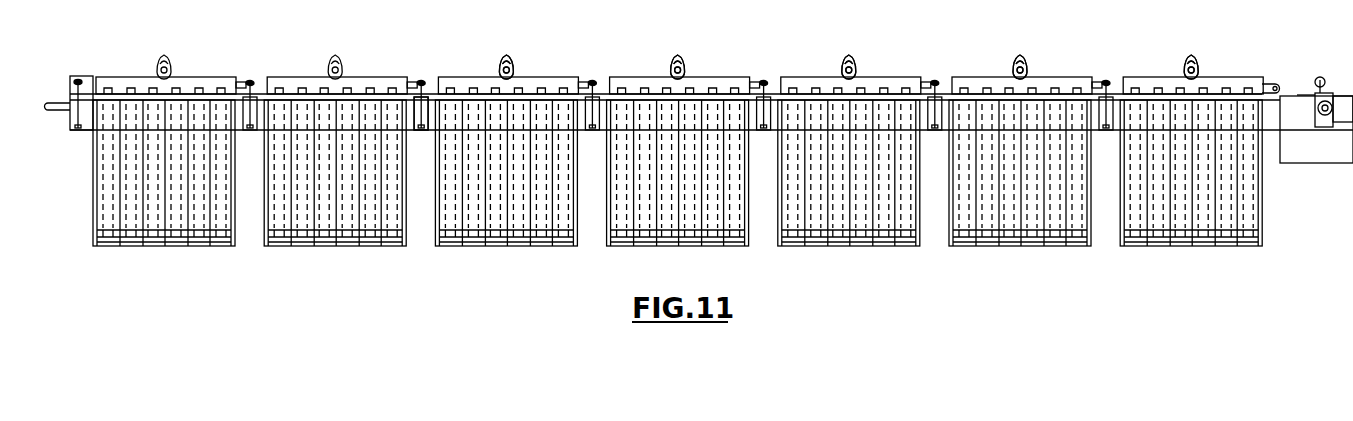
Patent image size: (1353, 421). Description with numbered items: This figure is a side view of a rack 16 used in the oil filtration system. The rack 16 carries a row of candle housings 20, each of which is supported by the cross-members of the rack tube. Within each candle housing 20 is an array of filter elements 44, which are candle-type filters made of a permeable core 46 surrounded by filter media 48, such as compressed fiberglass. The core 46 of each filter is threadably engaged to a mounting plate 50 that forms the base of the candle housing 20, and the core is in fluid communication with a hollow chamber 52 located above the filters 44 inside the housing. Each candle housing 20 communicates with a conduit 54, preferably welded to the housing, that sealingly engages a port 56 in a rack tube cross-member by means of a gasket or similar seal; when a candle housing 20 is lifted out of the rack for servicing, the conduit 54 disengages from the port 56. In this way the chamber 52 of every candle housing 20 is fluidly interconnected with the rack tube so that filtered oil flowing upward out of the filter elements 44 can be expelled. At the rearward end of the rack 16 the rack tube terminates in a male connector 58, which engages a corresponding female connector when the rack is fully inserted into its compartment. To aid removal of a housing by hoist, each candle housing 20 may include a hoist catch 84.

The rack 16 is at (84, 64).
The candle housing 20 is at (205, 56).
The filter element 44 is at (139, 173).
The permeable core 46 is at (335, 253).
The filter media 48 is at (312, 191).
The mounting plate 50 is at (163, 55).
The hollow chamber 52 is at (164, 67).
The conduit 54 is at (240, 77).
The port 56 is at (428, 117).
The male connector 58 is at (1350, 166).
The hoist catch 84 is at (419, 53).